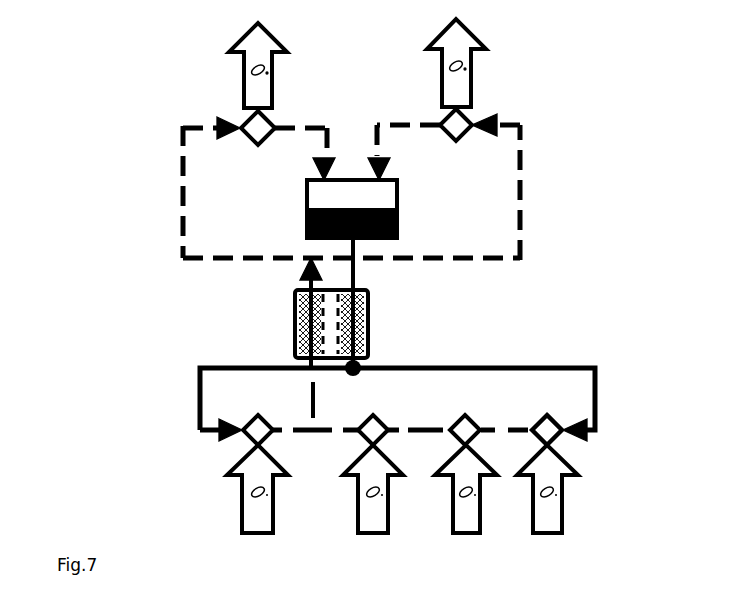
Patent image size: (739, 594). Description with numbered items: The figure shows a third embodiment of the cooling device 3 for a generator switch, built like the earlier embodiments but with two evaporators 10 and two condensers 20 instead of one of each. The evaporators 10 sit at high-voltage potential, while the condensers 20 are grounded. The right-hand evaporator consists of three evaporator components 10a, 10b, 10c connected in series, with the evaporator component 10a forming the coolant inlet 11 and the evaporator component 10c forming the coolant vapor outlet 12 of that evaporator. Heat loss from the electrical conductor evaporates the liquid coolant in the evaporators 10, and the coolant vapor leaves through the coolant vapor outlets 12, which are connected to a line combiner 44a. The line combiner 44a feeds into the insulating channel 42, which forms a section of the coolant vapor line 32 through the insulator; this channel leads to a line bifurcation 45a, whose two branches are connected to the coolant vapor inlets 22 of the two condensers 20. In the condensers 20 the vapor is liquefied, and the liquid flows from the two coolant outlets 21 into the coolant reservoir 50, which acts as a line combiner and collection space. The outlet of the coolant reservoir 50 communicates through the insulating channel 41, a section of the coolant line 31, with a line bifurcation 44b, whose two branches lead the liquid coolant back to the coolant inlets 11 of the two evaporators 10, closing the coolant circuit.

The cooling device 3 is at (618, 105).
The evaporator 10 is at (222, 528).
The evaporator component 10a is at (558, 424).
The evaporator component 10b is at (484, 424).
The evaporator component 10c is at (391, 424).
The coolant inlet 11 is at (257, 431).
The coolant vapor outlet 12 is at (361, 433).
The condenser 20 is at (265, 175).
The coolant outlet 21 is at (273, 125).
The coolant vapor inlet 22 is at (238, 125).
The coolant line 31 is at (520, 365).
The coolant vapor line 32 is at (517, 247).
The insulating channel 41 is at (366, 312).
The insulating channel 42 is at (297, 310).
The line combiner 44a is at (308, 425).
The line bifurcation 44b is at (362, 363).
The line bifurcation 45a is at (290, 258).
The coolant reservoir 50 is at (352, 200).